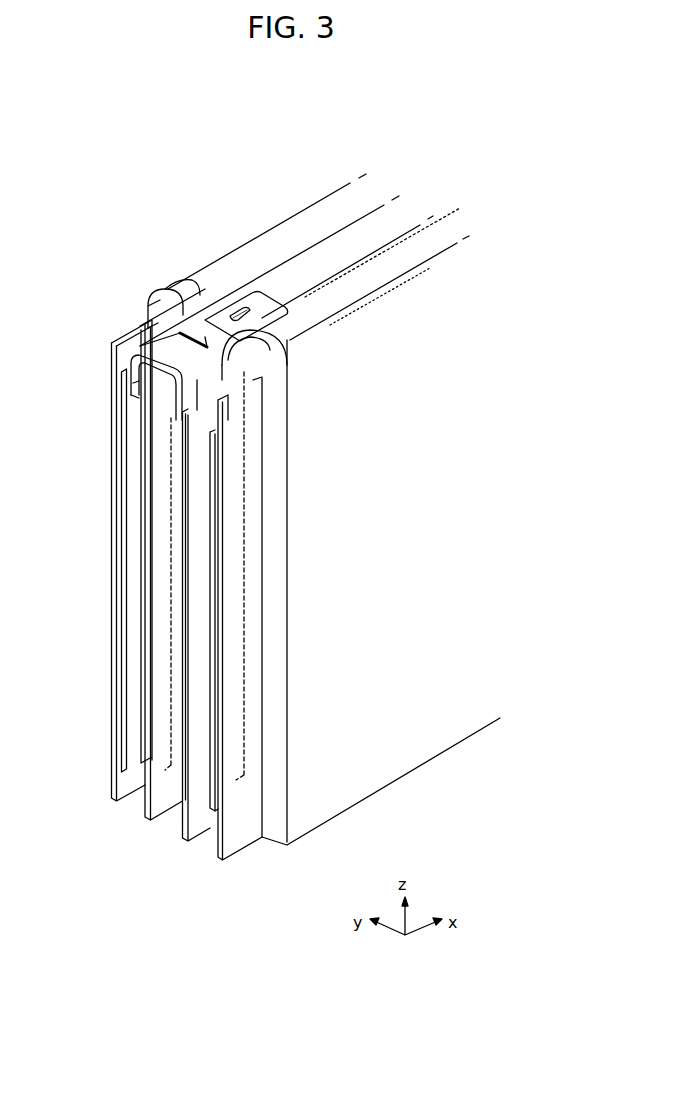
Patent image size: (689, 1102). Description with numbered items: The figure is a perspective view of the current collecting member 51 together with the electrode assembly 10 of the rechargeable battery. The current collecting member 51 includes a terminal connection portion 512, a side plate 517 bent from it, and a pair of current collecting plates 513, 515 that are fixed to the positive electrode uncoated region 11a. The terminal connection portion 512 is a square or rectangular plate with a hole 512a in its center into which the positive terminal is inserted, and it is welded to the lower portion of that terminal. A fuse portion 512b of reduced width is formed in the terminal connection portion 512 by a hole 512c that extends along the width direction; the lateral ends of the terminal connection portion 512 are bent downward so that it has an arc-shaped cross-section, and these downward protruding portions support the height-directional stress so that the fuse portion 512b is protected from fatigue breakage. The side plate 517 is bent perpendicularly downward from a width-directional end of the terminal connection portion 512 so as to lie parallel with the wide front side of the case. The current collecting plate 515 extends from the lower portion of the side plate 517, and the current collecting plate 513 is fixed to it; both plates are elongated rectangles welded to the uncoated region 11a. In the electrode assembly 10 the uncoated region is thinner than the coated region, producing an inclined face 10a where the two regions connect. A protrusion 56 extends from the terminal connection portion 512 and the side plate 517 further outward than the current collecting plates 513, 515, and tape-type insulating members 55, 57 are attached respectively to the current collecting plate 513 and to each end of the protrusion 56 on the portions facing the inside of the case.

The electrode assembly 10 is at (328, 249).
The inclined face 10a is at (271, 828).
The positive electrode uncoated region 11a is at (238, 830).
The current collecting member 51 is at (215, 306).
The insulating member 55 is at (213, 637).
The protrusion 56 is at (133, 383).
The insulating member 57 is at (152, 330).
The terminal connection portion 512 is at (341, 268).
The hole 512a is at (241, 308).
The fuse portion 512b is at (287, 340).
The hole 512c is at (152, 300).
The current collecting plate 513 is at (127, 770).
The current collecting plate 515 is at (165, 797).
The side plate 517 is at (197, 396).